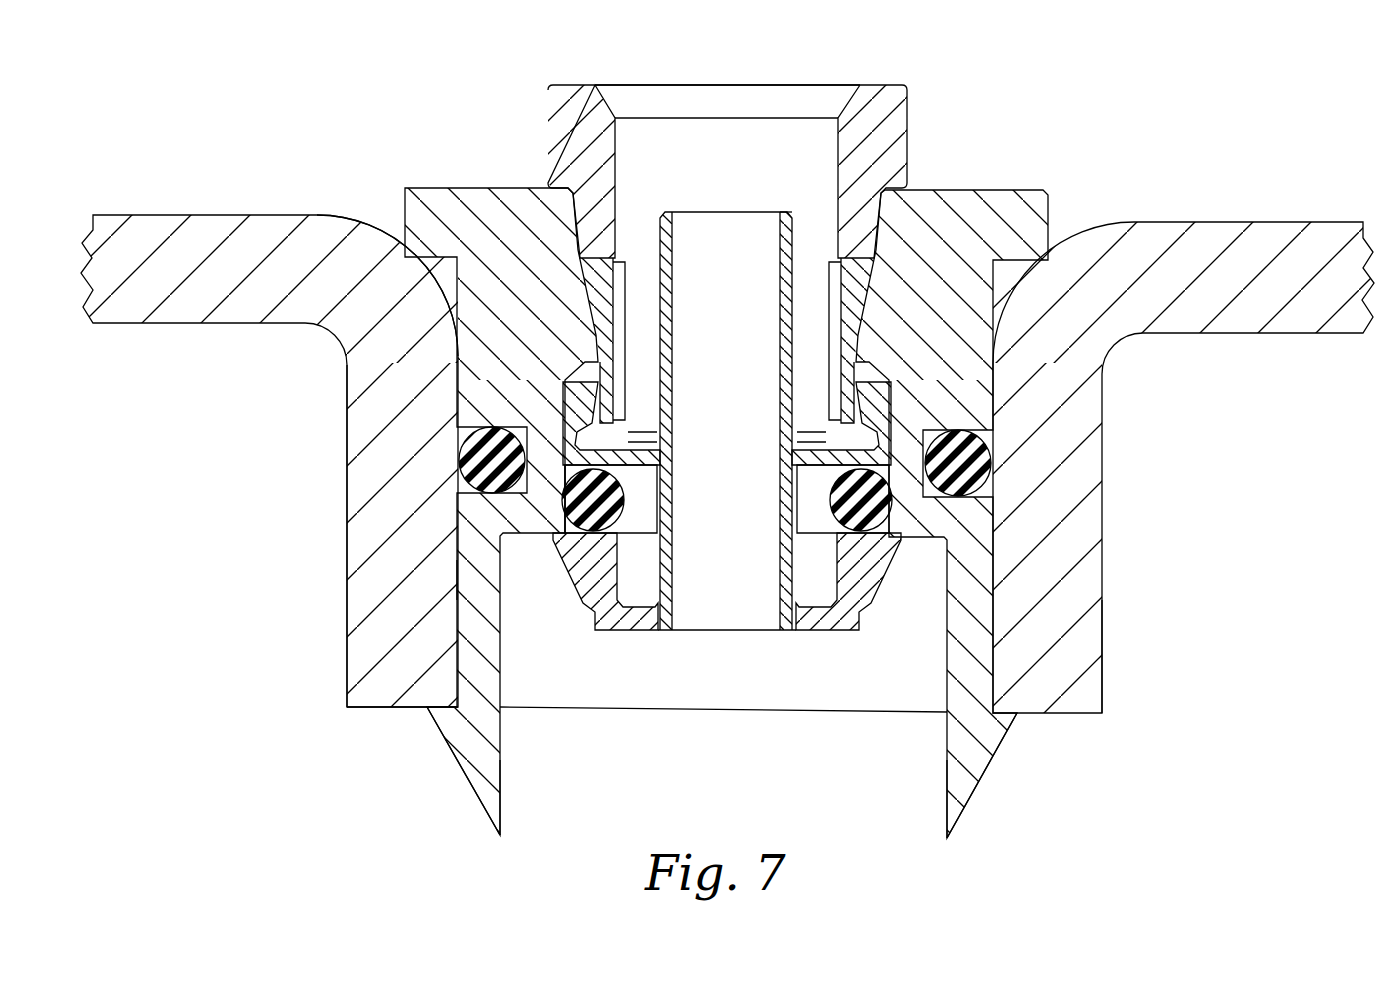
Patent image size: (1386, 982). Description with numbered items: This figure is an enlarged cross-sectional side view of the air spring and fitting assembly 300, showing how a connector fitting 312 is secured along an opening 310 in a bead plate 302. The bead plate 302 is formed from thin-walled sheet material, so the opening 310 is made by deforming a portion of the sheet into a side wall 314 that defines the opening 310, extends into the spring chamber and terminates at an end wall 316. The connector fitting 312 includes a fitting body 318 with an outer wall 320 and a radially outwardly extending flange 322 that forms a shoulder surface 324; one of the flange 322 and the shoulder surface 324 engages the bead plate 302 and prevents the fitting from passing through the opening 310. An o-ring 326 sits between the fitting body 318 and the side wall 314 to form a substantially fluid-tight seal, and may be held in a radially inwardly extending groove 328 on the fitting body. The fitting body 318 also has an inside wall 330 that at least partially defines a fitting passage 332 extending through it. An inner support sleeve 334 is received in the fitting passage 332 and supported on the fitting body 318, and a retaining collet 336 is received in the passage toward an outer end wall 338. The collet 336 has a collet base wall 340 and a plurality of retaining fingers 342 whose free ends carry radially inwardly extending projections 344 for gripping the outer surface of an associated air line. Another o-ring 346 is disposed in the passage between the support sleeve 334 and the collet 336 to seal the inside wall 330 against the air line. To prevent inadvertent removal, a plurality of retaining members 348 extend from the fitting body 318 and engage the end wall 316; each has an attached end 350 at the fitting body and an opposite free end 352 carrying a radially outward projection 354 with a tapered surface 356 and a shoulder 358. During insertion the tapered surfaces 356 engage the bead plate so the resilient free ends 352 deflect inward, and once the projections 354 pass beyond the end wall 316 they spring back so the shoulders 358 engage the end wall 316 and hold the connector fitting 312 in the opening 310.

The valve assembly 300 is at (1248, 92).
The bead plate 302 is at (150, 208).
The opening 310 is at (670, 682).
The connector fitting 312 is at (540, 90).
The side wall 314 is at (350, 498).
The end wall 316 is at (373, 708).
The fitting body 318 is at (952, 353).
The outer wall 320 is at (418, 292).
The radially outwardly extending flange 322 is at (426, 228).
The shoulder surface 324 is at (1017, 262).
The o-ring 326 is at (960, 463).
The radially inwardly extending groove 328 is at (990, 535).
The inside wall 330 is at (900, 295).
The fitting passage 332 is at (815, 213).
The inner support sleeve 334 is at (683, 479).
The retaining collet 336 is at (673, 92).
The outer end wall 338 is at (418, 217).
The collet base wall 340 is at (713, 170).
The retaining fingers 342 is at (655, 362).
The radially inwardly extending projections 344 is at (652, 430).
The o-ring 346 is at (587, 497).
The retaining members 348 is at (458, 786).
The attached end 350 is at (452, 586).
The free end 352 is at (988, 828).
The projection 354 is at (993, 730).
The tapered surface 356 is at (437, 733).
The shoulder 358 is at (1002, 712).